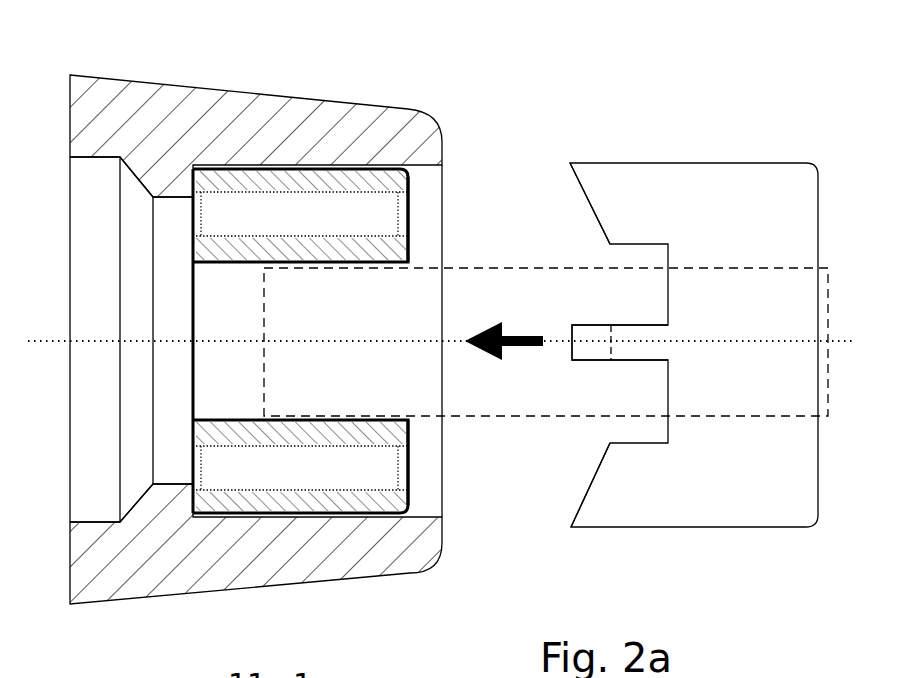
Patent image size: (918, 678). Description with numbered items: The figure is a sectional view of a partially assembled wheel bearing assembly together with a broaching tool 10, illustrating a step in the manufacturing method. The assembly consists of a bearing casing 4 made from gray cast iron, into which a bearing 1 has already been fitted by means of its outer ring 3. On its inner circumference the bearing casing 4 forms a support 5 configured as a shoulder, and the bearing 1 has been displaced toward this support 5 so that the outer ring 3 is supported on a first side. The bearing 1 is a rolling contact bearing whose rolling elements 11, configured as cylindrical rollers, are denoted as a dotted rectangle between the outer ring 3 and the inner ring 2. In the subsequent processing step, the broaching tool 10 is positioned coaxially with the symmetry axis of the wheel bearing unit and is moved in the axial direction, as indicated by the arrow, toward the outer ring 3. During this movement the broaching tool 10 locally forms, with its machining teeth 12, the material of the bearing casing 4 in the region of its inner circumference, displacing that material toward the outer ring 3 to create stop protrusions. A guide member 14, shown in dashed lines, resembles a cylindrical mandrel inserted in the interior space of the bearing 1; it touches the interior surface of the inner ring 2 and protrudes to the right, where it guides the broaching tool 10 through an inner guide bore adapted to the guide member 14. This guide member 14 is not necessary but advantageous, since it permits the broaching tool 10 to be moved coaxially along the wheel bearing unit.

The bearing 1 is at (248, 207).
The inner ring 2 is at (283, 252).
The outer ring 3 is at (333, 177).
The bearing casing 4 is at (344, 562).
The support 5 is at (175, 172).
The broaching tool 10 is at (703, 198).
The rolling elements 11 is at (405, 212).
The machining teeth 12 is at (578, 194).
The guide member 14 is at (462, 413).